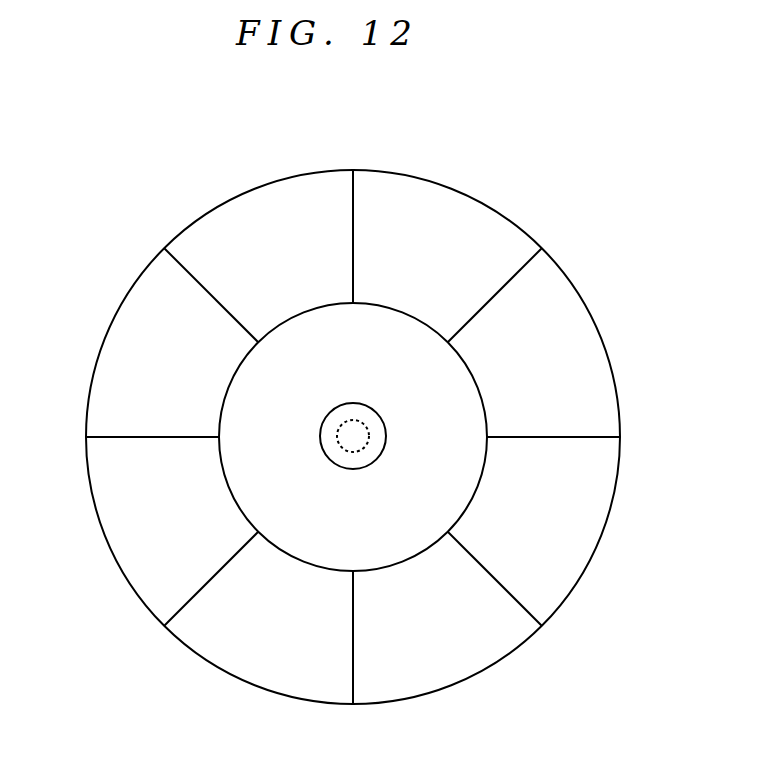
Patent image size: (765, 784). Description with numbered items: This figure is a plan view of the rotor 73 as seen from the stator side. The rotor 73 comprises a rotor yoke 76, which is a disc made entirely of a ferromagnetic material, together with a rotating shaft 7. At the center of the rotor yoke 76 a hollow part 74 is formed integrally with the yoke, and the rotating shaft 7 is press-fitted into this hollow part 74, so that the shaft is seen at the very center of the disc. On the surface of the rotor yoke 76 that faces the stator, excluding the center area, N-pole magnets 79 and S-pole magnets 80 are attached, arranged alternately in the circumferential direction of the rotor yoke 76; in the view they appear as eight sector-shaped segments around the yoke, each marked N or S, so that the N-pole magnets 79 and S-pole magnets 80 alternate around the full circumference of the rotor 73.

The rotating shaft 7 is at (370, 432).
The rotor 73 is at (612, 288).
The hollow part 74 is at (341, 404).
The rotor yoke 76 is at (565, 263).
The N-pole magnet 79 is at (278, 205).
The S-pole magnet 80 is at (437, 220).